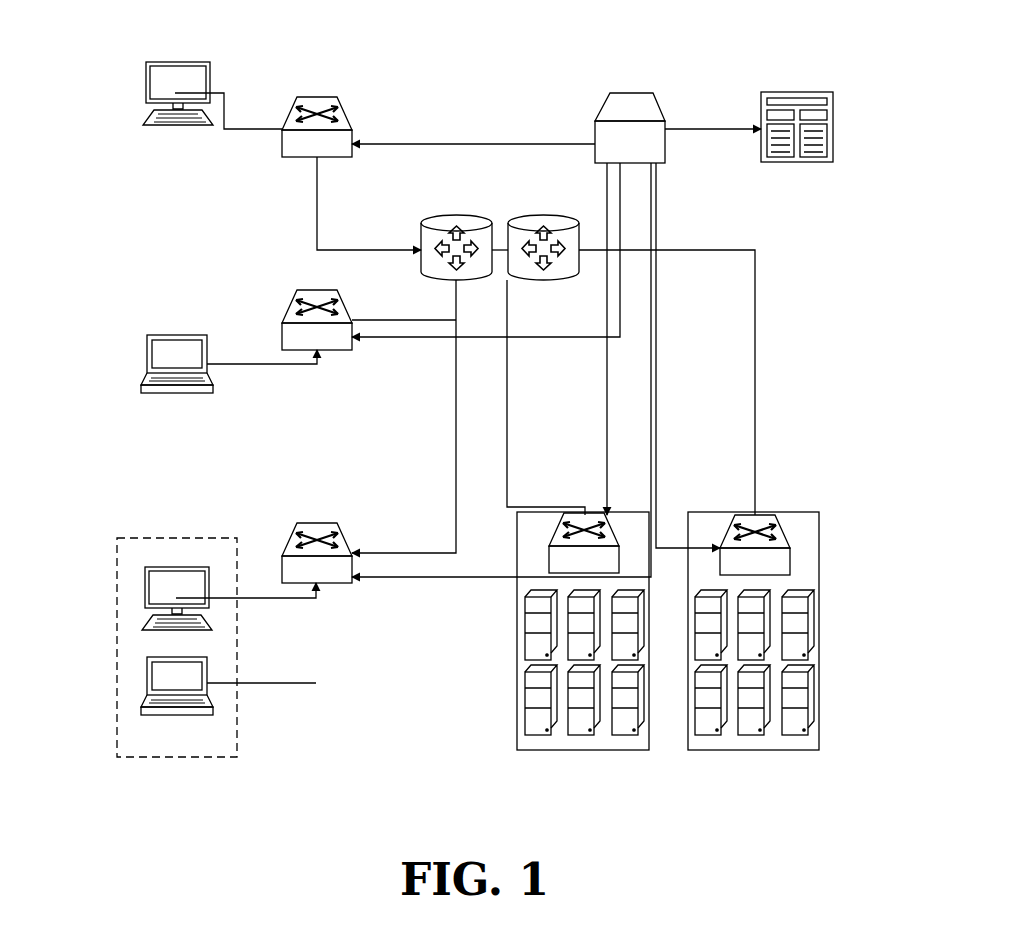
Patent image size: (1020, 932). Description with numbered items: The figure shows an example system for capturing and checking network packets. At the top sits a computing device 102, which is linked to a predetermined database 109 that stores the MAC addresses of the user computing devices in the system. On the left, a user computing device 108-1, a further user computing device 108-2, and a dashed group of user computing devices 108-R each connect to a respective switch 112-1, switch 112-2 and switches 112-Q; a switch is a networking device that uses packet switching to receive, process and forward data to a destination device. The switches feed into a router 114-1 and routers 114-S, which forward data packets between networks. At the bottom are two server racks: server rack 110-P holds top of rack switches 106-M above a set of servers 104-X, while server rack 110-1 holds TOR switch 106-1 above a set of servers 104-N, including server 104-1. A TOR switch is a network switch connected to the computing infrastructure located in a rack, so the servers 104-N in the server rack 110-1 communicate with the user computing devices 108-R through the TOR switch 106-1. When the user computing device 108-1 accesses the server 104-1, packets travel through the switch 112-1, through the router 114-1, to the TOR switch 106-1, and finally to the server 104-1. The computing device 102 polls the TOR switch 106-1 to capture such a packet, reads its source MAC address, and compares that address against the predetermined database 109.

The computing device 102 is at (628, 93).
The predetermined database 109 is at (833, 124).
The router 114-1 is at (457, 215).
The routers 114-S is at (545, 215).
The switch 112-1 is at (282, 142).
The switch 112-2 is at (282, 330).
The switches 112-Q is at (292, 537).
The user computing device 108-1 is at (146, 83).
The user computing device 108-2 is at (147, 352).
The user computing devices 108-R is at (117, 600).
The server rack 110-P is at (532, 654).
The server rack 110-1 is at (796, 659).
The TOR switches 106-M is at (549, 560).
The TOR switch 106-1 is at (790, 560).
The servers 104-X is at (537, 737).
The server 104-1 is at (703, 737).
The servers 104-N is at (795, 737).